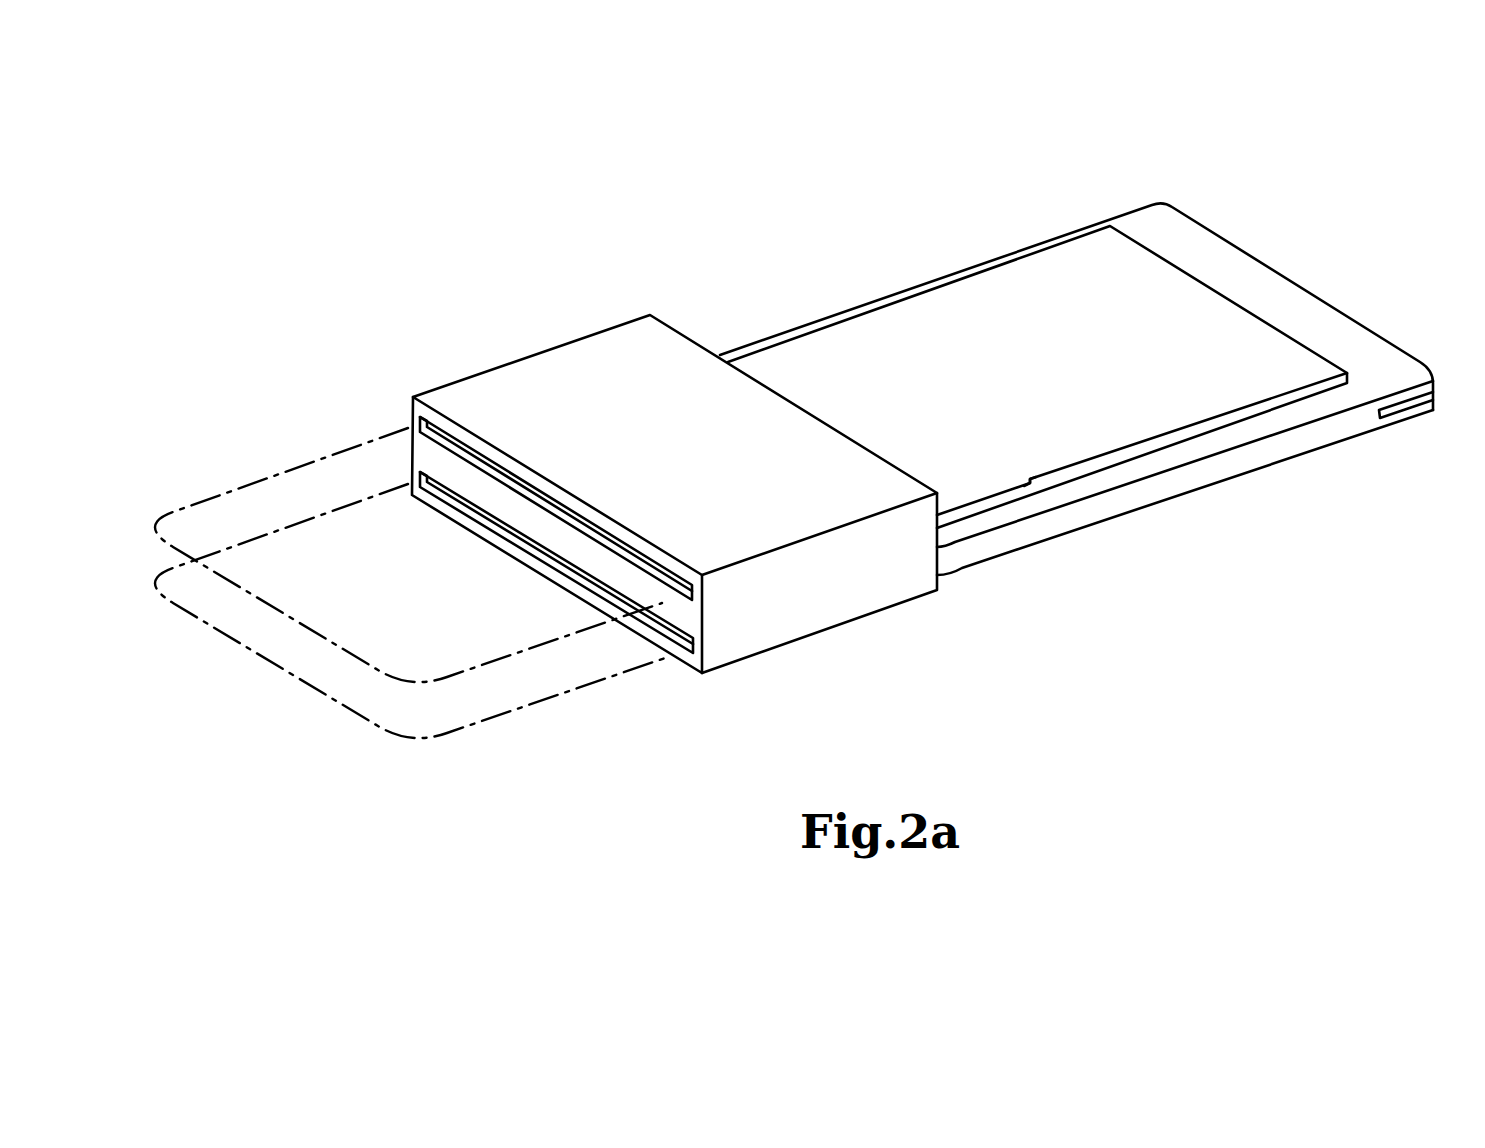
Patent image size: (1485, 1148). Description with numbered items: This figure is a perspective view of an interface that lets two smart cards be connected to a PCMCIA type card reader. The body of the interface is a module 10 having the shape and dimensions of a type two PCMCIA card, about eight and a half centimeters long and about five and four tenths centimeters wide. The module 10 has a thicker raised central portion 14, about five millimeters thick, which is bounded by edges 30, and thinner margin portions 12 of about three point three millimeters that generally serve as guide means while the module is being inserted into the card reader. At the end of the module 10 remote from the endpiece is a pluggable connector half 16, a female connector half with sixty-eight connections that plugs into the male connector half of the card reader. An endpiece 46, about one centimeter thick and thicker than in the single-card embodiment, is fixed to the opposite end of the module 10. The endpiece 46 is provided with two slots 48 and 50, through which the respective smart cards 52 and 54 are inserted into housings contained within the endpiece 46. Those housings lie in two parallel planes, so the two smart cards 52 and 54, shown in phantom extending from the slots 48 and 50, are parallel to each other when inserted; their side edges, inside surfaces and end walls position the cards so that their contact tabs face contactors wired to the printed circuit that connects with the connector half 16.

The module 10 is at (1096, 407).
The margin portions 12 is at (1337, 427).
The central portion 14 is at (864, 340).
The pluggable connector half 16 is at (1265, 283).
The edges 30 is at (1030, 487).
The endpiece 46 is at (674, 498).
The slot 48 is at (697, 593).
The slot 50 is at (693, 648).
The smart card 52 is at (434, 644).
The smart card 54 is at (442, 731).